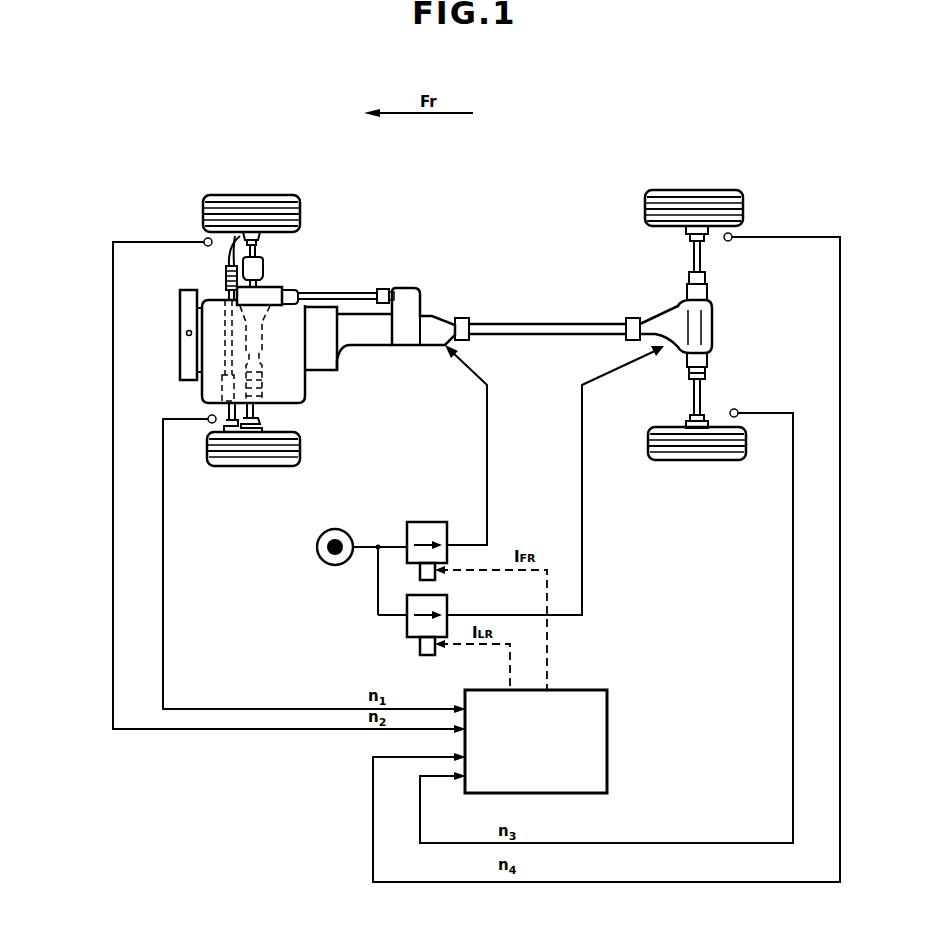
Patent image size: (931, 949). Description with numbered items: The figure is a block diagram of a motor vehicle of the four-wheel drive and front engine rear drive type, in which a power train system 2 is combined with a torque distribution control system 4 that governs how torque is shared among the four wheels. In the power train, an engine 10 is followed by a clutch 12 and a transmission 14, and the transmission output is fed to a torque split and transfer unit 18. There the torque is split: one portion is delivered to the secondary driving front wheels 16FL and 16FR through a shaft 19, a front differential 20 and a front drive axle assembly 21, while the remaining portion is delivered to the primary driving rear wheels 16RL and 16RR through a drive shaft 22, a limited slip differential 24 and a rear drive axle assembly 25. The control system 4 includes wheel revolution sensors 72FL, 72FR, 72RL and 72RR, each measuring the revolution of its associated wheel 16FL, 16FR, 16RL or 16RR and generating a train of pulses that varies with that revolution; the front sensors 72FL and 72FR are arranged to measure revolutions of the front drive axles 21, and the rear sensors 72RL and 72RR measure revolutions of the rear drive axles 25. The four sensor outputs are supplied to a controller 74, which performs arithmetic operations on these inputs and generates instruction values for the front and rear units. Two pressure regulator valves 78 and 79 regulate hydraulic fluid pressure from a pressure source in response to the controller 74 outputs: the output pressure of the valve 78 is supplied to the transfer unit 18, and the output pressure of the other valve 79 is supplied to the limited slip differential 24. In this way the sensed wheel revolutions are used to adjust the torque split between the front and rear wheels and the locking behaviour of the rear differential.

The power train system 2 is at (514, 254).
The torque distribution control system 4 is at (304, 752).
The engine 10 is at (203, 324).
The clutch 12 is at (322, 357).
The transmission 14 is at (360, 345).
The front right wheel 16FR is at (257, 195).
The front left wheel 16FL is at (268, 468).
The rear right wheel 16RR is at (694, 191).
The rear left wheel 16RL is at (689, 460).
The torque split and transfer unit 18 is at (430, 316).
The shaft 19 is at (343, 293).
The front differential 20 is at (268, 291).
The front drive axle assembly 21 is at (258, 407).
The drive shaft 22 is at (541, 322).
The limited slip differential 24 is at (665, 322).
The rear drive axle assembly 25 is at (690, 395).
The wheel revolution sensor 72FR is at (204, 240).
The wheel revolution sensor 72FL is at (207, 426).
The wheel revolution sensor 72RR is at (729, 242).
The wheel revolution sensor 72RL is at (736, 408).
The controller 74 is at (579, 690).
The pressure regulator valve 78 is at (422, 522).
The pressure regulator valve 79 is at (447, 607).